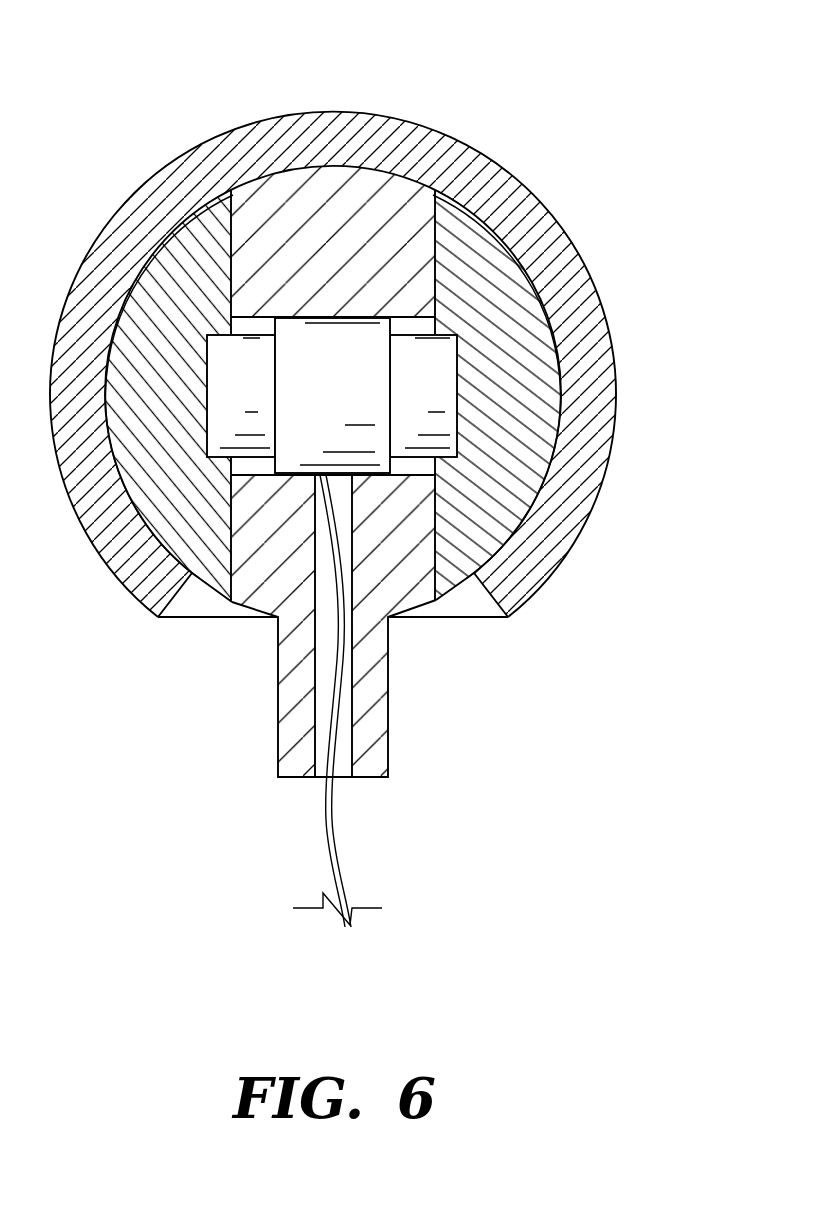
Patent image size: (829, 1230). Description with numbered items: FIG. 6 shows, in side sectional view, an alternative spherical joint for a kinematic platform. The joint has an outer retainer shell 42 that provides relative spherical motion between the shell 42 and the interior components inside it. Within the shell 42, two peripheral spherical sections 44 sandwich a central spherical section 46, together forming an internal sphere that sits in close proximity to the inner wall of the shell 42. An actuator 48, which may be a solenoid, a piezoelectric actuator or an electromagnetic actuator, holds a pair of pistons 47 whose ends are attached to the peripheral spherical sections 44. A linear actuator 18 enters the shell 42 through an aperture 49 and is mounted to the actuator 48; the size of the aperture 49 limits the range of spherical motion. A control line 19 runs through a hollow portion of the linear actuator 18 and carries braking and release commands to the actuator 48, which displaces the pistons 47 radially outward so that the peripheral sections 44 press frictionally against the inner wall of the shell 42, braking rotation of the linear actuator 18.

The linear actuator 18 is at (390, 757).
The control line 19 is at (333, 837).
The outer retainer shell 42 is at (575, 538).
The peripheral spherical sections 44 is at (180, 253).
The central spherical section 46 is at (332, 180).
The piston 47 is at (440, 384).
The actuator 48 is at (312, 333).
The aperture 49 is at (192, 663).